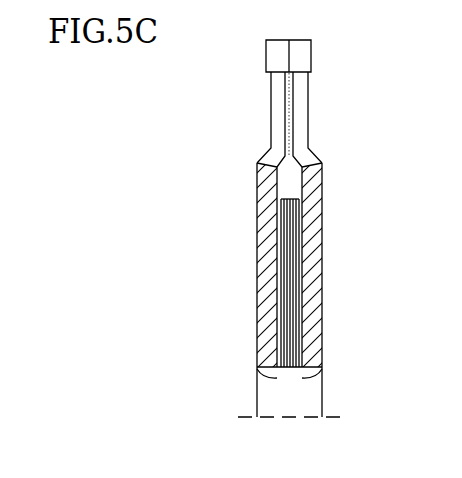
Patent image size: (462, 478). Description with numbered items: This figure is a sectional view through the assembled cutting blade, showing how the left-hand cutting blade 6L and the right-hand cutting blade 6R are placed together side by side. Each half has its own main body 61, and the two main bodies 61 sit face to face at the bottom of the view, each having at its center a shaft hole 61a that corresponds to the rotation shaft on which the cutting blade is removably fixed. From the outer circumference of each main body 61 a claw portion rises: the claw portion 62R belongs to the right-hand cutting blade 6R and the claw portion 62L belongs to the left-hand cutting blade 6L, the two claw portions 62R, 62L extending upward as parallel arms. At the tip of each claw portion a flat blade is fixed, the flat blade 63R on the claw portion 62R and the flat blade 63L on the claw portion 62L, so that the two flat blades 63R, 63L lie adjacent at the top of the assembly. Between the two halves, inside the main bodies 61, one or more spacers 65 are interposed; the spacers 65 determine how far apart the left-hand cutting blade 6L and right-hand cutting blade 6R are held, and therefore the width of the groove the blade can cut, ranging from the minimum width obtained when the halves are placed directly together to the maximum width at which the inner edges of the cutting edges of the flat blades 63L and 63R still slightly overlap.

The right-hand cutting blade 6R is at (221, 126).
The left-hand cutting blade 6L is at (357, 126).
The main body 61 is at (262, 296).
The shaft hole 61a is at (262, 377).
The claw portion 62R is at (271, 105).
The claw portion 62L is at (308, 105).
The flat blade 63R is at (266, 59).
The flat blade 63L is at (311, 58).
The spacer 65 is at (285, 277).